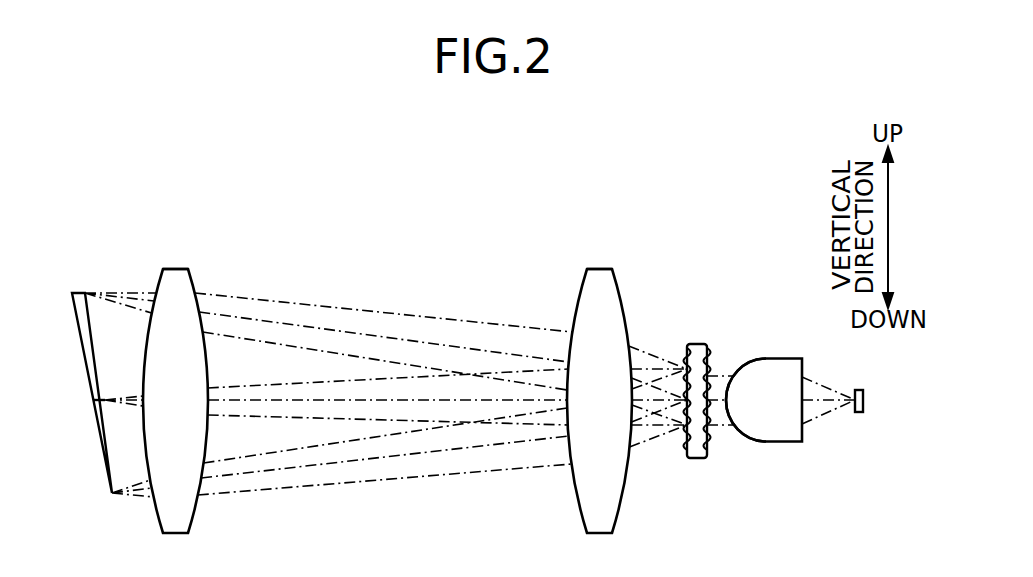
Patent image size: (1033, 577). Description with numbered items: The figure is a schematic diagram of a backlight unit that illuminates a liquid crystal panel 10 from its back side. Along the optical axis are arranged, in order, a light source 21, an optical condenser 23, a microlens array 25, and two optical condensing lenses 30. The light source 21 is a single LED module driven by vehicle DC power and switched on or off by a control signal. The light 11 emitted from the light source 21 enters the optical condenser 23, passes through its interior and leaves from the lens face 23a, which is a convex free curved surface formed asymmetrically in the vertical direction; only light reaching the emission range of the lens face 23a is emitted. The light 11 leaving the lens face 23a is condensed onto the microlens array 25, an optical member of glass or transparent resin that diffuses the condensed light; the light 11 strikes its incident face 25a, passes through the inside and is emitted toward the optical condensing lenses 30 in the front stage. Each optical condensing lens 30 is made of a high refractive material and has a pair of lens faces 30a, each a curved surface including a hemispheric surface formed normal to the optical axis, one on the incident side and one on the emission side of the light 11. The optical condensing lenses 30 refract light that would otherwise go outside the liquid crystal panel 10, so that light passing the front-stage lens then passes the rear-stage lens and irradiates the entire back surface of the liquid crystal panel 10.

The liquid crystal panel 10 is at (100, 489).
The light 11 is at (381, 310).
The light source 21 is at (879, 403).
The optical condenser 23 is at (789, 348).
The lens face 23a is at (727, 371).
The microlens array 25 is at (695, 334).
The incident face 25a is at (669, 346).
The optical condensing lenses 30 is at (174, 259).
The lens faces 30a is at (160, 281).